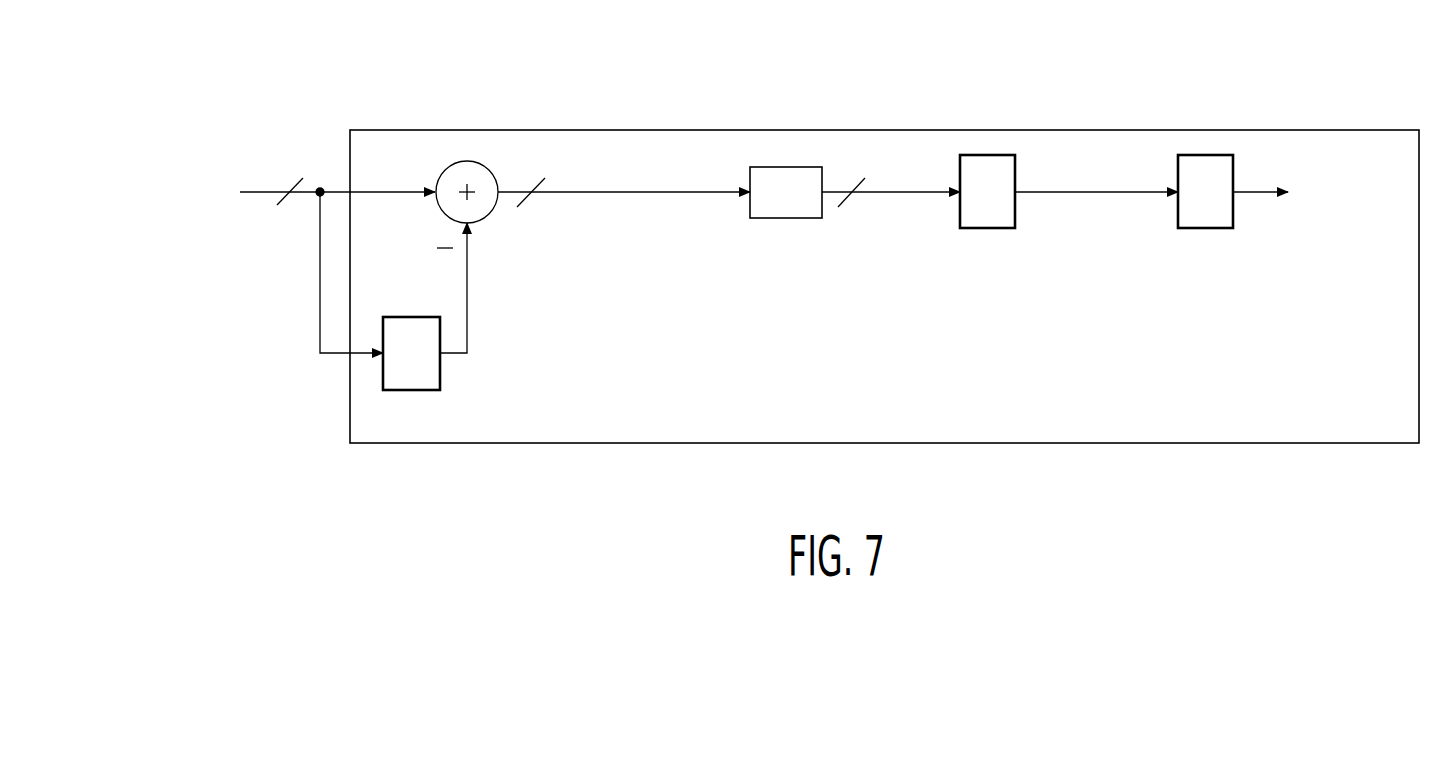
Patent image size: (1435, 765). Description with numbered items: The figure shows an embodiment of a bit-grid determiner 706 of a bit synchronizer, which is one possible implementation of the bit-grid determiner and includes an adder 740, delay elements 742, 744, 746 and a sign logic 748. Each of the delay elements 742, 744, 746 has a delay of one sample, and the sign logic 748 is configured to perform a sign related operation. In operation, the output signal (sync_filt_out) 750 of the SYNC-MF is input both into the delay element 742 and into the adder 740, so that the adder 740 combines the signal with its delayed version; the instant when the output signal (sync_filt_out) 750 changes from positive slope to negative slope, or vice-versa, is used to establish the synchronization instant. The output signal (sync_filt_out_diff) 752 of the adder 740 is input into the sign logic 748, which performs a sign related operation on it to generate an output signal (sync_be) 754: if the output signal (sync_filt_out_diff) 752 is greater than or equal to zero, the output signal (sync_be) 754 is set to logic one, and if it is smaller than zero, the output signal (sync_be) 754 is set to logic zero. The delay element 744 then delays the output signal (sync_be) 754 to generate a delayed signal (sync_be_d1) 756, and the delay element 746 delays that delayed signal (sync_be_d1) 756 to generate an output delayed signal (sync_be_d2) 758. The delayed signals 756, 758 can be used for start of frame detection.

The bit-grid determiner 706 is at (1120, 130).
The adder 740 is at (487, 218).
The delay element 742 is at (442, 370).
The delay element 744 is at (990, 228).
The delay element 746 is at (1210, 230).
The sign logic 748 is at (782, 218).
The output signal (sync_filt_out) 750 is at (163, 178).
The output signal (sync_filt_out_diff) 752 is at (580, 155).
The output signal (sync_be) 754 is at (890, 228).
The delayed signal (sync_be_d1) 756 is at (1062, 230).
The output delayed signal (sync_be_d2) 758 is at (1320, 208).